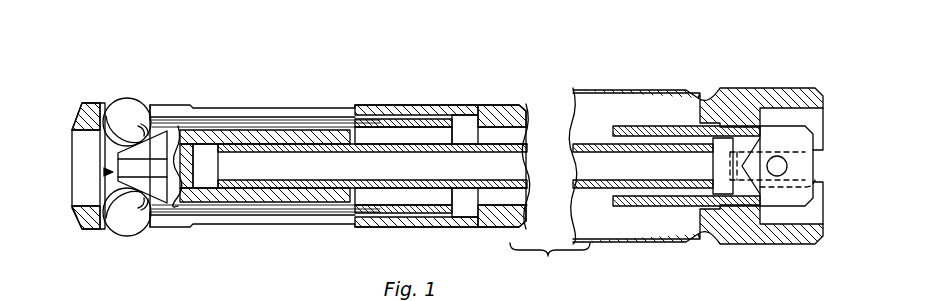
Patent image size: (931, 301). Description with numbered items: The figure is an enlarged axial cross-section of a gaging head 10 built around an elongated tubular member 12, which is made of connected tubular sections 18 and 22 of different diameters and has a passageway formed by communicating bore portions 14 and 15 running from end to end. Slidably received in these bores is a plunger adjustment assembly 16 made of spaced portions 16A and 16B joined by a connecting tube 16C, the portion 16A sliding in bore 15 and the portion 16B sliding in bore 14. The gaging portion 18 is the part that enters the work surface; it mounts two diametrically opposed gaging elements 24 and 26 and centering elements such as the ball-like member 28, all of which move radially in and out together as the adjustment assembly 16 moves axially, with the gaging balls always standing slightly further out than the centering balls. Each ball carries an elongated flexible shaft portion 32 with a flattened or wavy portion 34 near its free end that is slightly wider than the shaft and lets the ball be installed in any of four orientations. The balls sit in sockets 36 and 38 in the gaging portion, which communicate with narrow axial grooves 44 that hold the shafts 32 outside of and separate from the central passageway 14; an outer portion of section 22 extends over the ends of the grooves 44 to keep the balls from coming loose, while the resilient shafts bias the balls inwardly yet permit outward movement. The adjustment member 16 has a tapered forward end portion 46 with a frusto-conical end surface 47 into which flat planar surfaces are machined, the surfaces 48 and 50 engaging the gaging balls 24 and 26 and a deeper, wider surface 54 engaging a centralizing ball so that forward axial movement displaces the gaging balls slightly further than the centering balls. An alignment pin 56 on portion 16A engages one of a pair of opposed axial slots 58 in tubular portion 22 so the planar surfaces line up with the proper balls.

The gaging head 10 is at (196, 72).
The tubular member 12 is at (442, 98).
The bore portion 14 is at (343, 200).
The bore portion 15 is at (648, 196).
The plunger adjustment assembly 16 is at (782, 124).
The portion of plunger assembly 16A is at (712, 128).
The portion of plunger assembly 16B is at (212, 140).
The connecting tube 16C is at (514, 145).
The tubular section 18 is at (272, 107).
The tubular section 22 is at (475, 106).
The gaging element 24 is at (124, 112).
The gaging element 26 is at (129, 215).
The centering element 28 is at (116, 155).
The shaft portion 32 is at (315, 123).
The flattened or wavy portion 34 is at (402, 114).
The socket 36 is at (137, 102).
The socket 38 is at (111, 214).
The axial groove 44 is at (341, 122).
The tapered forward end portion 46 is at (104, 172).
The frusto-conical end surface 47 is at (105, 150).
The planar surface 48 is at (110, 118).
The planar surface 50 is at (148, 216).
The planar surface 54 is at (157, 173).
The alignment pin 56 is at (788, 165).
The slot 58 is at (827, 187).